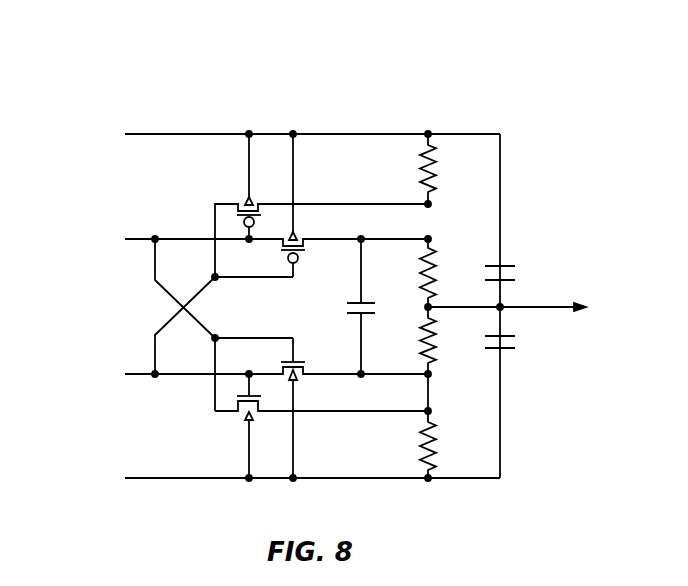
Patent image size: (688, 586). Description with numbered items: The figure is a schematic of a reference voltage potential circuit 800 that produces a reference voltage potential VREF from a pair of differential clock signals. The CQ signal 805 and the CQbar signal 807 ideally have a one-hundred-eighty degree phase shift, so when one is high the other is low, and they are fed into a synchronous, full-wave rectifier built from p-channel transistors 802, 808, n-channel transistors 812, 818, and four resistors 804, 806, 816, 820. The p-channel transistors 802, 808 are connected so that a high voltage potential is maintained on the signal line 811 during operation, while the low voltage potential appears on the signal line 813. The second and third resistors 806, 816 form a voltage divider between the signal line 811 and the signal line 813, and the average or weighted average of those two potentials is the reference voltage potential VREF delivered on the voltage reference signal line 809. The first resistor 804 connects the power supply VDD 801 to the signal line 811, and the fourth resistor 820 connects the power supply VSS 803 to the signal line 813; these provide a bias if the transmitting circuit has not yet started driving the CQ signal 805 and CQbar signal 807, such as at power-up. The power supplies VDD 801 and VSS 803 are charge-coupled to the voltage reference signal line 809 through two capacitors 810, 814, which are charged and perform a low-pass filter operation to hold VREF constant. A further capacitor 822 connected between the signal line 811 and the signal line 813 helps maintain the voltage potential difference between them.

The reference voltage potential circuit 800 is at (505, 71).
The power supply VDD 801 is at (377, 134).
The p-channel transistor 802 is at (240, 212).
The power supply VSS 803 is at (375, 479).
The resistor R1 804 is at (437, 172).
The CQ signal 805 is at (141, 378).
The resistor R2 806 is at (437, 258).
The CQbar signal 807 is at (140, 239).
The p-channel transistor 808 is at (304, 247).
The voltage reference signal line 809 is at (562, 303).
The capacitor C2 810 is at (505, 263).
The signal line 811 is at (313, 204).
The n-channel transistor 812 is at (305, 368).
The signal line 813 is at (313, 411).
The capacitor C3 814 is at (505, 351).
The resistor R3 816 is at (437, 362).
The n-channel transistor 818 is at (238, 403).
The resistor R4 820 is at (437, 450).
The capacitor C1 822 is at (357, 315).